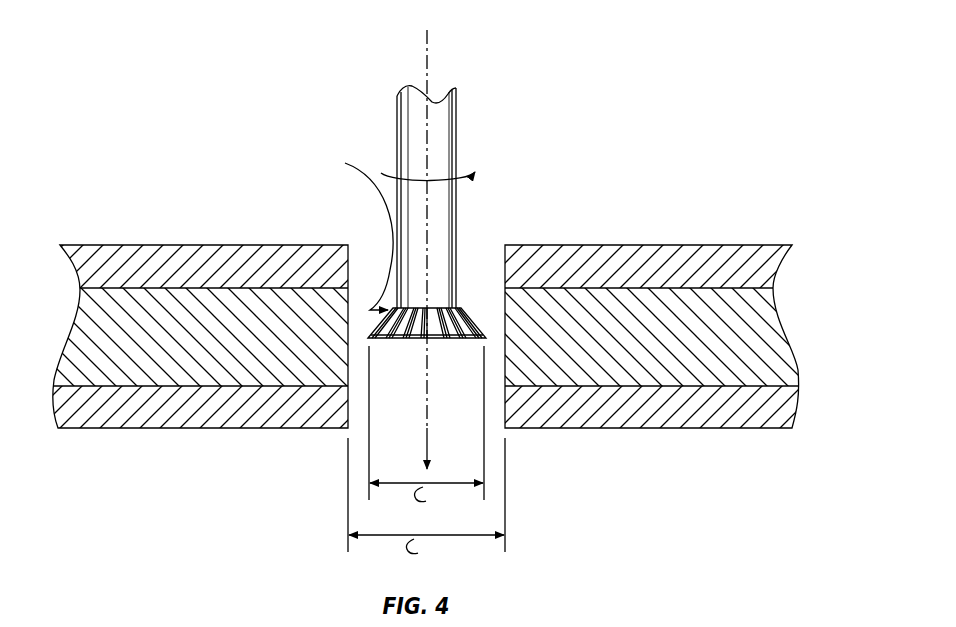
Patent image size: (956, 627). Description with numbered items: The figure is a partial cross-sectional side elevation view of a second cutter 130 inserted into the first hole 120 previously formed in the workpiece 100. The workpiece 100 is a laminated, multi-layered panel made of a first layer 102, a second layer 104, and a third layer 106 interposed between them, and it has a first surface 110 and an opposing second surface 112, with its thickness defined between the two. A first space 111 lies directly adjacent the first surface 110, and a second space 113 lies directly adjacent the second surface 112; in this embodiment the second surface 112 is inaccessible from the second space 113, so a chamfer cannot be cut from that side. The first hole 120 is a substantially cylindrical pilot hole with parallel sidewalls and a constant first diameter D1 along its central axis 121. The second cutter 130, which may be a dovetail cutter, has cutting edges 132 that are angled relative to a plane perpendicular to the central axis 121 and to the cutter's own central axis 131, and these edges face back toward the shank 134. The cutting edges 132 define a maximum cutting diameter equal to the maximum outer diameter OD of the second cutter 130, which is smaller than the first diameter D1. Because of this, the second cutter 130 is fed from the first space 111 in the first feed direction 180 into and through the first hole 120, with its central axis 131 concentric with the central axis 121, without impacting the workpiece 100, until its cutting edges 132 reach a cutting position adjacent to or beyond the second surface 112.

The workpiece 100 is at (675, 330).
The first layer 102 is at (603, 273).
The second layer 104 is at (682, 411).
The third layer 106 is at (738, 337).
The first surface 110 is at (195, 337).
The first space 111 is at (244, 178).
The second surface 112 is at (132, 428).
The second space 113 is at (268, 528).
The first hole 120 is at (357, 249).
The central axis of the first hole 121 is at (427, 57).
The central axis of the second cutter 131 is at (482, 223).
The second cutter 130 is at (419, 197).
The cutting edges 132 is at (470, 315).
The shank 134 is at (398, 143).
The first feed direction 180 is at (427, 434).
The maximum outer diameter OD is at (426, 497).
The first diameter D1 is at (426, 552).